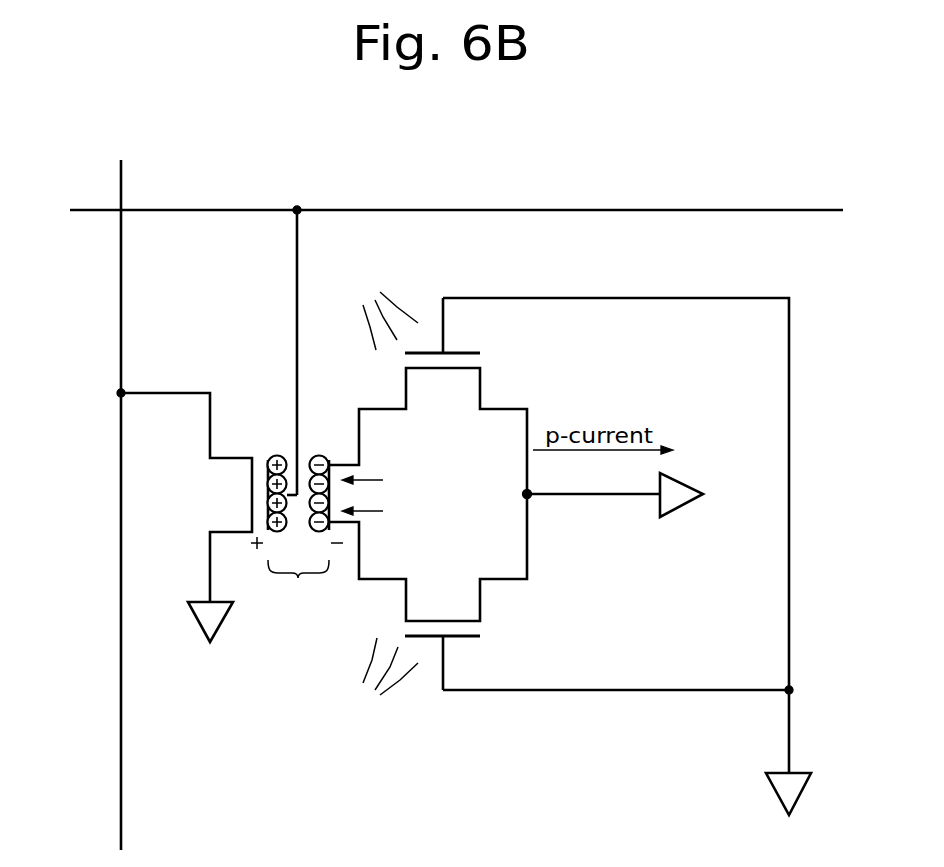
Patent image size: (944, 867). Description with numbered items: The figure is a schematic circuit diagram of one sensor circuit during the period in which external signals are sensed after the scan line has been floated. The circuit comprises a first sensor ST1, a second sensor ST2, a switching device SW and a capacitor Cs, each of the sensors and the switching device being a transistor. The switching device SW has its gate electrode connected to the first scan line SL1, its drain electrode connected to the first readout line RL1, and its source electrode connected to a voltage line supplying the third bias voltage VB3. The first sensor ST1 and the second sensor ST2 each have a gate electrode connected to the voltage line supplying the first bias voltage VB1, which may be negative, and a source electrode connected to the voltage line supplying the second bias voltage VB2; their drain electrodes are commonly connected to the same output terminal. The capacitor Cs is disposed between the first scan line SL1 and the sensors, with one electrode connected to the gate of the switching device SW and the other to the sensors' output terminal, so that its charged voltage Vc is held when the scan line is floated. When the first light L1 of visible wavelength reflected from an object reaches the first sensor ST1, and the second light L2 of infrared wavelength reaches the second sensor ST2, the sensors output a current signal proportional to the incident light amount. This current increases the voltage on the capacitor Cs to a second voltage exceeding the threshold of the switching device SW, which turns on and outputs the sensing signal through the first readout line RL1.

The first readout line RL1 is at (119, 491).
The first scan line SL1 is at (435, 211).
The switching device SW is at (186, 497).
The third bias voltage VB3 is at (210, 637).
The capacitor Cs is at (299, 410).
The capacitor voltage Vc is at (297, 545).
The first sensor ST1 is at (428, 396).
The second sensor ST2 is at (428, 592).
The first light L1 is at (386, 308).
The second light L2 is at (376, 678).
The second bias voltage VB2 is at (636, 495).
The first bias voltage VB1 is at (627, 572).